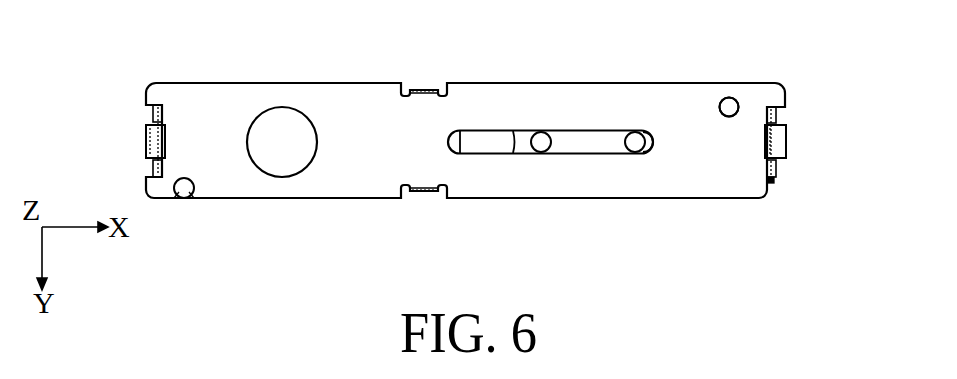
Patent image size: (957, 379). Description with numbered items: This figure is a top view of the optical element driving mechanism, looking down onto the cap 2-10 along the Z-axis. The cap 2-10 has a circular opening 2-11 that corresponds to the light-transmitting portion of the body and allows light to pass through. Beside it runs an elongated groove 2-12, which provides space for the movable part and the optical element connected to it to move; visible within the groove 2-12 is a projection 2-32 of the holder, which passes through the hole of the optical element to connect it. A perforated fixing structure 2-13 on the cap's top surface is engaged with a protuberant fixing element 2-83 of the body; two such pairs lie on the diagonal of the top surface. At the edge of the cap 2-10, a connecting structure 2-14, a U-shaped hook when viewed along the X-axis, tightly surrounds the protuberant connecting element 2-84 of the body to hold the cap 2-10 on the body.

The cap 2-10 is at (753, 93).
The opening 2-11 is at (282, 118).
The groove 2-12 is at (607, 141).
The fixing structure 2-13 is at (719, 105).
The connecting structure 2-14 is at (777, 117).
The projection 2-32 is at (541, 140).
The fixing element 2-83 is at (730, 97).
The connecting element 2-84 is at (786, 143).